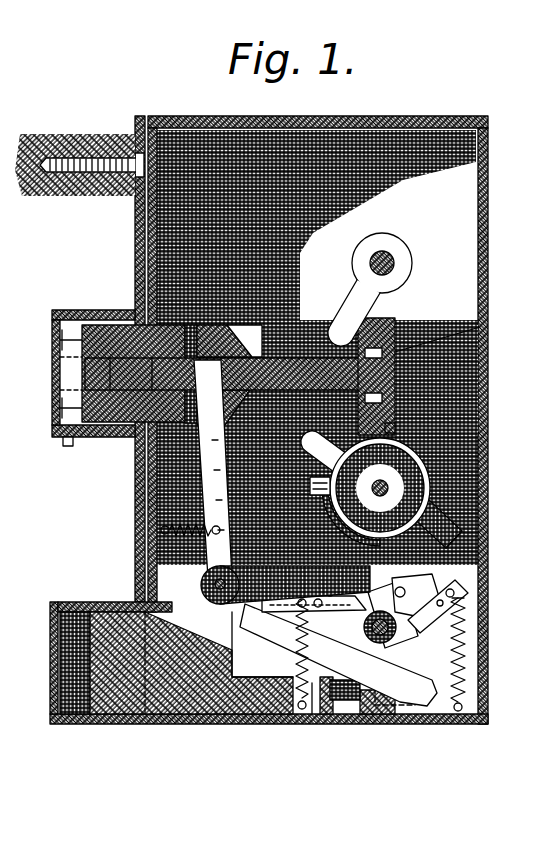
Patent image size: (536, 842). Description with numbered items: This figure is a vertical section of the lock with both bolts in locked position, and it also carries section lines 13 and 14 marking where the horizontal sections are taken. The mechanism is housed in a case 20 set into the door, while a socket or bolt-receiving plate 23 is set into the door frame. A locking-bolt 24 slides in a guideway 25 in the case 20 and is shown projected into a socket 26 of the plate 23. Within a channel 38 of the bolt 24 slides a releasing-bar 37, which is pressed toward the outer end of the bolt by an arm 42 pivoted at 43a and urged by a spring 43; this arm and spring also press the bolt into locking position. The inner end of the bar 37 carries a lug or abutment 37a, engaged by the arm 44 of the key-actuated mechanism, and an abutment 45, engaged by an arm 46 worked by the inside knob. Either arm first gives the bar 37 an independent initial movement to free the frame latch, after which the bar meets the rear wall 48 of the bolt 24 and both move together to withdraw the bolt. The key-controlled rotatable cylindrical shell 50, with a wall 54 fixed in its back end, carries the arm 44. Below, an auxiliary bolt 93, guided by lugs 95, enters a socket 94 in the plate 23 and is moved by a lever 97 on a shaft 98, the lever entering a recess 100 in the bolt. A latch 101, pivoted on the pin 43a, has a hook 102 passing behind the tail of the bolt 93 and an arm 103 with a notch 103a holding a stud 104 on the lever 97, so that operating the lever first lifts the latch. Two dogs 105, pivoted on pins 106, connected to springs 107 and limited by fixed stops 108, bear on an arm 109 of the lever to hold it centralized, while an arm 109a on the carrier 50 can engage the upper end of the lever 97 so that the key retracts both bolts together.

The section line 13— 13 is at (265, 256).
The section line 14— 14 is at (272, 635).
The case 20 is at (413, 117).
The socket or bolt-receiving plate 23 is at (135, 517).
The locking-bolt 24 is at (187, 325).
The guideway 25 is at (432, 332).
The socket 26 is at (108, 310).
The releasing-bar 37 is at (262, 372).
The lug or abutment 37a is at (400, 432).
The channel 38 is at (164, 325).
The arm 42 is at (222, 490).
The spring 43 is at (182, 527).
The pivot pin 43a is at (223, 581).
The arm 44 is at (310, 446).
The abutment or lug 45 is at (373, 326).
The arm 46 is at (352, 303).
The rear wall 48 is at (480, 327).
The rotatable cylindrical shell 50 is at (428, 478).
The wall 54 is at (373, 471).
The auxiliary bolt 93 is at (182, 700).
The socket 94 is at (72, 705).
The lugs 95 is at (318, 716).
The lever 97 is at (388, 658).
The shaft 98 is at (462, 650).
The recess 100 is at (352, 702).
The latch 101 is at (267, 633).
The hook 102 is at (402, 710).
The arm 103 is at (285, 585).
The notch 103a is at (455, 540).
The stud 104 is at (402, 590).
The dog 105 is at (413, 638).
The pin 106 is at (318, 600).
The spring 107 is at (462, 630).
The fixed stop 108 is at (331, 592).
The arm 109 is at (389, 620).
The arm 109a is at (448, 520).